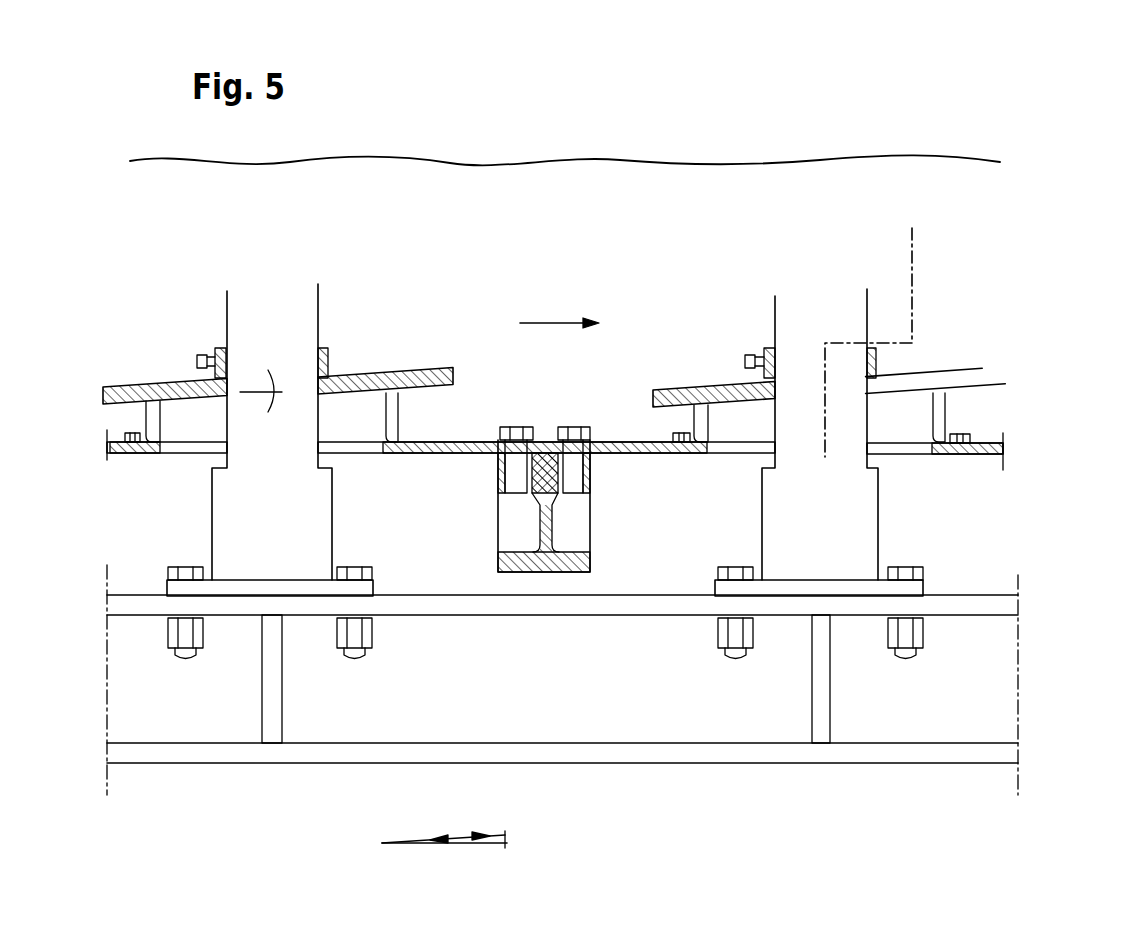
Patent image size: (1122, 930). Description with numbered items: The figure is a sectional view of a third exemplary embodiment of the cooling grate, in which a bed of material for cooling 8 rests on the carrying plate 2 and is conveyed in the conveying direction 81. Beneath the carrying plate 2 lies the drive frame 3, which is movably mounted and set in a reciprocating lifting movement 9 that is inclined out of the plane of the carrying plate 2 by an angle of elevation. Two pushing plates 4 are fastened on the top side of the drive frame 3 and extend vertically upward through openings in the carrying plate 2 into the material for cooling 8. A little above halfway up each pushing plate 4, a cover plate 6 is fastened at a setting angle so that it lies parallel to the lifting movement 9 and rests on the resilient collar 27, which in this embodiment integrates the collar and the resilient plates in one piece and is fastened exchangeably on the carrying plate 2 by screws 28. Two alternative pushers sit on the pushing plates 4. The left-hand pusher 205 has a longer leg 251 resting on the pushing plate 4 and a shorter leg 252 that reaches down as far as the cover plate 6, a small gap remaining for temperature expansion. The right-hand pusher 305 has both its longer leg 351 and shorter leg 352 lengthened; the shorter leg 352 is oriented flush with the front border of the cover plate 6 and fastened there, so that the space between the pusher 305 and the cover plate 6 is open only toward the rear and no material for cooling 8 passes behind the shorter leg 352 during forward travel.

The carrying plate 2 is at (451, 461).
The drive frame 3 is at (723, 712).
The pushing plate 4 is at (225, 512).
The cover plate 6 is at (425, 373).
The material for cooling 8 is at (468, 199).
The lifting movement 9 is at (460, 833).
The resilient collar 27 is at (388, 407).
The screws 28 is at (957, 457).
The conveying direction 81 is at (541, 323).
The pusher 205 is at (231, 180).
The longer leg 251 is at (262, 278).
The shorter leg 252 is at (353, 312).
The pusher 305 is at (550, 201).
The longer leg 351 is at (852, 278).
The shorter leg 352 is at (998, 307).